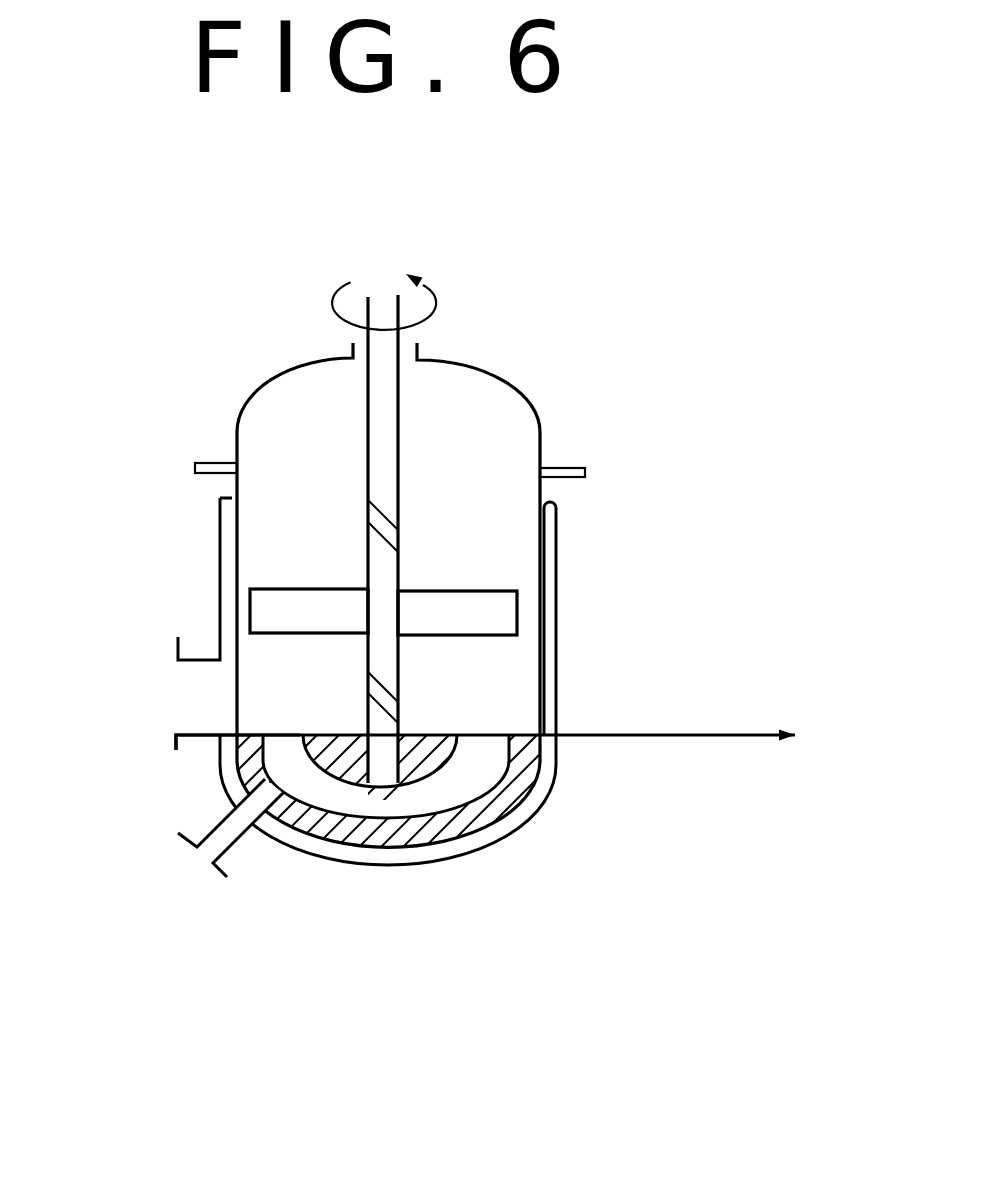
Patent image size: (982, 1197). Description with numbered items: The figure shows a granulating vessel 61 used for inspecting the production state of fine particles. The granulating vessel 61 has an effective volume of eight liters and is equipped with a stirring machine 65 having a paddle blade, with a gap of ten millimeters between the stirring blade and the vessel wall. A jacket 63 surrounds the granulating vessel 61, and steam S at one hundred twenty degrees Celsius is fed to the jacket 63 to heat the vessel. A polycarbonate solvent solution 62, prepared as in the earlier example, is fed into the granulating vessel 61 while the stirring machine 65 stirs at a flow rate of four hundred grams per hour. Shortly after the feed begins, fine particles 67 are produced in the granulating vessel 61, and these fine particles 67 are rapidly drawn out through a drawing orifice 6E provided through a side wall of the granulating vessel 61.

The granulating vessel 61 is at (235, 430).
The polycarbonate solvent solution 62 is at (190, 867).
The jacket 63 is at (557, 618).
The stirring machine 65 is at (400, 455).
The fine particles 67 is at (463, 823).
The drawing orifice 6E is at (185, 698).
The steam S is at (562, 547).